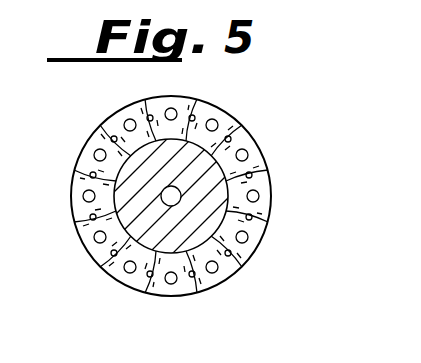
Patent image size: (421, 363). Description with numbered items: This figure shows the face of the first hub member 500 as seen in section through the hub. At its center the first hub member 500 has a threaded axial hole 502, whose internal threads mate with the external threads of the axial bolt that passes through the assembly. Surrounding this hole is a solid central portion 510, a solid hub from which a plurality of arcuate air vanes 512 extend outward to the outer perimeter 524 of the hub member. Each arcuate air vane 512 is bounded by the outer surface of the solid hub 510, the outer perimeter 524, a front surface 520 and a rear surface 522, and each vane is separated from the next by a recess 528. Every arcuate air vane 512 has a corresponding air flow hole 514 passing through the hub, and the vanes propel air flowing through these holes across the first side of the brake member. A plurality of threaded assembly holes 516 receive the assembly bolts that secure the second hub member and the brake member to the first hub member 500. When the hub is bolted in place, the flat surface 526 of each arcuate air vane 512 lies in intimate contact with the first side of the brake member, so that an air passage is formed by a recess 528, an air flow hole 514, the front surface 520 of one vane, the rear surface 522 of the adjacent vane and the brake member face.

The first hub member 500 is at (306, 170).
The threaded axial hole 502 is at (254, 214).
The solid central portion 510 is at (261, 239).
The arcuate air vane 512 is at (135, 105).
The air flow hole 514 is at (97, 135).
The threaded assembly hole 516 is at (73, 177).
The front surface 520 is at (85, 223).
The rear surface 522 is at (77, 197).
The outer perimeter 524 is at (270, 164).
The flat surface 526 is at (189, 103).
The recess 528 is at (247, 132).